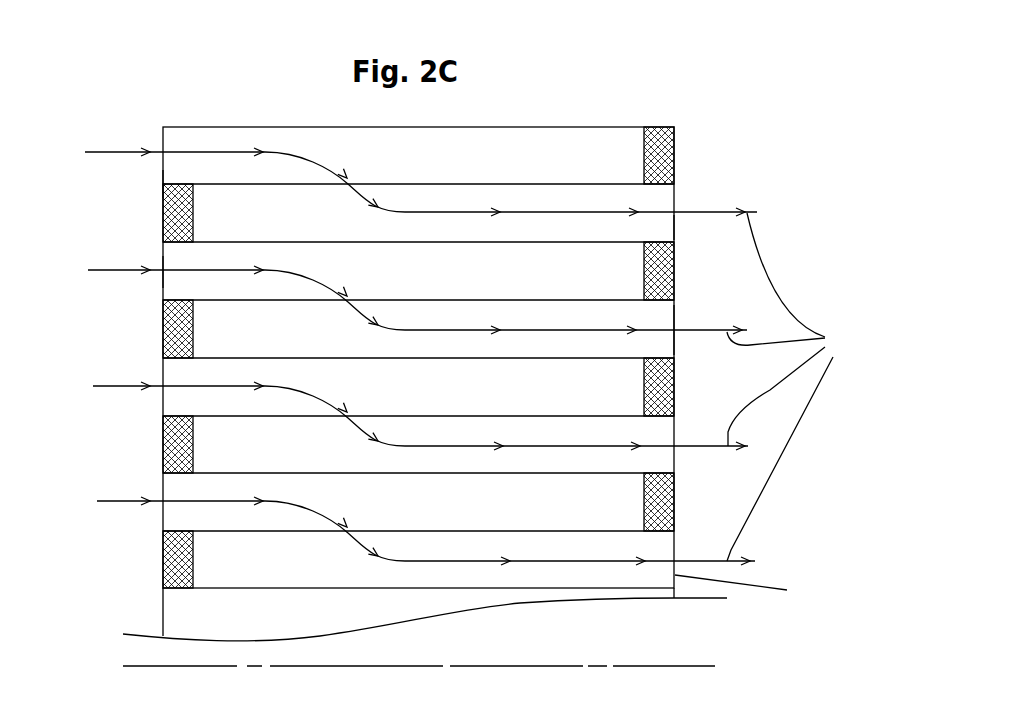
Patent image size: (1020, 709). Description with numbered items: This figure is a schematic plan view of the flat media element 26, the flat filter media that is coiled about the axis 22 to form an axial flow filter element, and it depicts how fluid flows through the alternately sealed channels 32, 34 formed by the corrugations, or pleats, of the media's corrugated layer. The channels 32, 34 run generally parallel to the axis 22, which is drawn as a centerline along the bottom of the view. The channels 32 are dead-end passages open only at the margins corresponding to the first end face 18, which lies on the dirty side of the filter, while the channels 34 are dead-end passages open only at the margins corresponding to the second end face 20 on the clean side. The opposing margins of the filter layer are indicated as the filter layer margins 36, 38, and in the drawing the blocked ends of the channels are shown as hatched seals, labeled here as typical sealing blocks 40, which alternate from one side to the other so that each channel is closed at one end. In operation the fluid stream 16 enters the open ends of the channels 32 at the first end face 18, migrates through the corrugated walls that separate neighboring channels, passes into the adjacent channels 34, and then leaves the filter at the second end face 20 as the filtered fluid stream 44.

The fluid stream 16 is at (100, 153).
The first end face 18 is at (68, 540).
The second end face 20 is at (820, 542).
The axis 22 is at (152, 667).
The flat media element 26 is at (203, 93).
The channels 32 is at (163, 258).
The channels 34 is at (665, 229).
The filter layer margin 36 is at (161, 612).
The filter layer margin 38 is at (744, 589).
The blocking seal members 40 is at (670, 127).
The fluid stream 44 is at (789, 387).